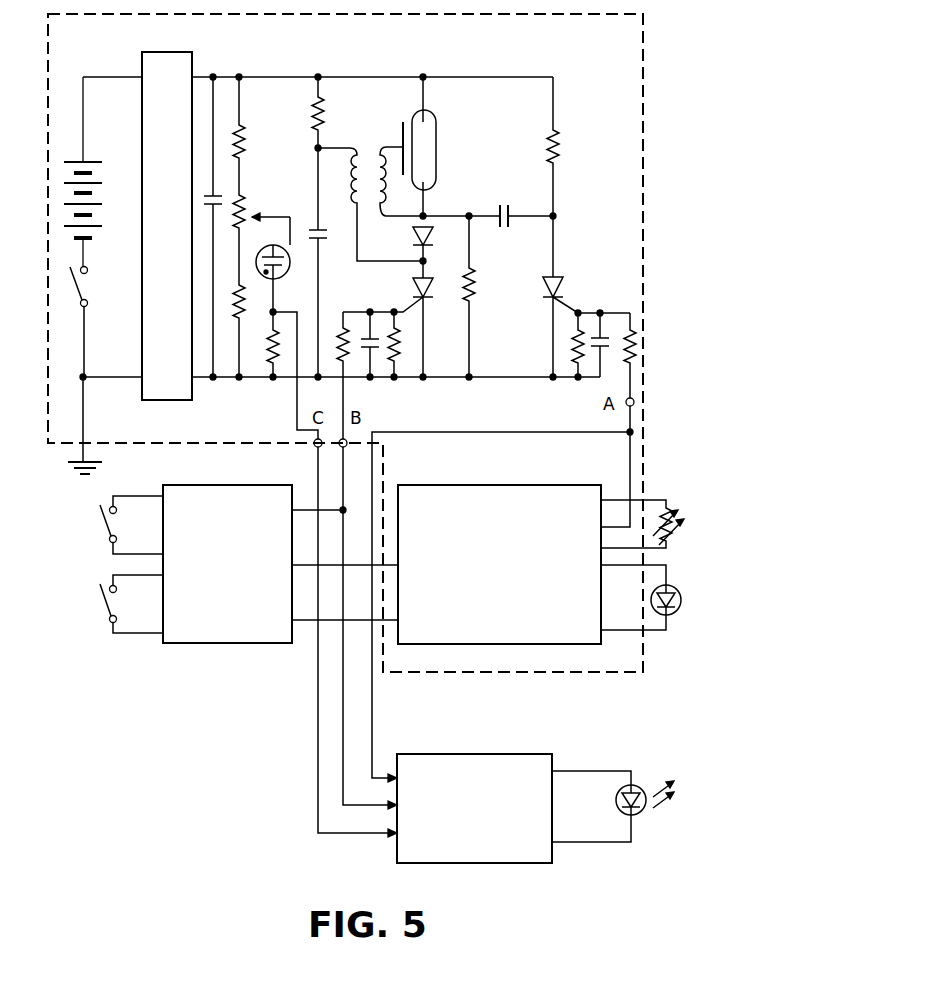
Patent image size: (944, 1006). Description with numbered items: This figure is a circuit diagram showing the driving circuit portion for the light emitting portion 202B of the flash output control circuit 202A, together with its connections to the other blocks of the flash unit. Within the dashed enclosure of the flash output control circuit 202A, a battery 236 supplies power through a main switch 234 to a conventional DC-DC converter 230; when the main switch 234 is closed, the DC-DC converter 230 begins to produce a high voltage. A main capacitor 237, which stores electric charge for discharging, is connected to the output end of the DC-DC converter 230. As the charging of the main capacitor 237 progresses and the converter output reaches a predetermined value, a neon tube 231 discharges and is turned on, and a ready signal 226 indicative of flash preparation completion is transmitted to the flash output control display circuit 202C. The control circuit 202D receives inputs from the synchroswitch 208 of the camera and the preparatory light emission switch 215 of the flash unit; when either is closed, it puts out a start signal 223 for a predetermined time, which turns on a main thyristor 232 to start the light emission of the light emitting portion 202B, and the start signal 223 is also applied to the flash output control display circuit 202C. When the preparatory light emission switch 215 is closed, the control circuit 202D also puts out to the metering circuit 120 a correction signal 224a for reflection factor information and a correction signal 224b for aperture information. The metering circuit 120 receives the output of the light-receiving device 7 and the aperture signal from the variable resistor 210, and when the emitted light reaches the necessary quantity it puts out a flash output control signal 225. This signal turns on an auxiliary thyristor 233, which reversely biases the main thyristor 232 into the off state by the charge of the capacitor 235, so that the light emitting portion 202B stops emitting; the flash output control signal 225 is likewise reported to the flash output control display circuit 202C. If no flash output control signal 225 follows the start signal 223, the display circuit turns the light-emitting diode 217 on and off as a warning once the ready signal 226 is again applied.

The flash output control circuit 202A is at (645, 140).
The DC-DC converter 230 is at (192, 53).
The battery 236 is at (94, 159).
The main switch 234 is at (88, 286).
The main capacitor 237 is at (222, 196).
The neon tube 231 is at (278, 244).
The ready signal 226 is at (296, 426).
The light emitting portion 202B is at (437, 146).
The capacitor 235 is at (498, 208).
The main thyristor 232 is at (412, 291).
The auxiliary thyristor 233 is at (563, 291).
The flash output control signal 225 is at (536, 432).
The start signal 223 is at (302, 508).
The control circuit 202D is at (229, 484).
The synchroswitch 208 is at (101, 526).
The preparatory light emission switch 215 is at (101, 605).
The correction signal 224a is at (303, 567).
The correction signal 224b is at (303, 621).
The metering circuit 120 is at (496, 484).
The variable resistor 210 is at (673, 505).
The light-receiving device 7 is at (683, 594).
The flash output control display circuit 202C is at (527, 753).
The light-emitting diode 217 is at (642, 817).